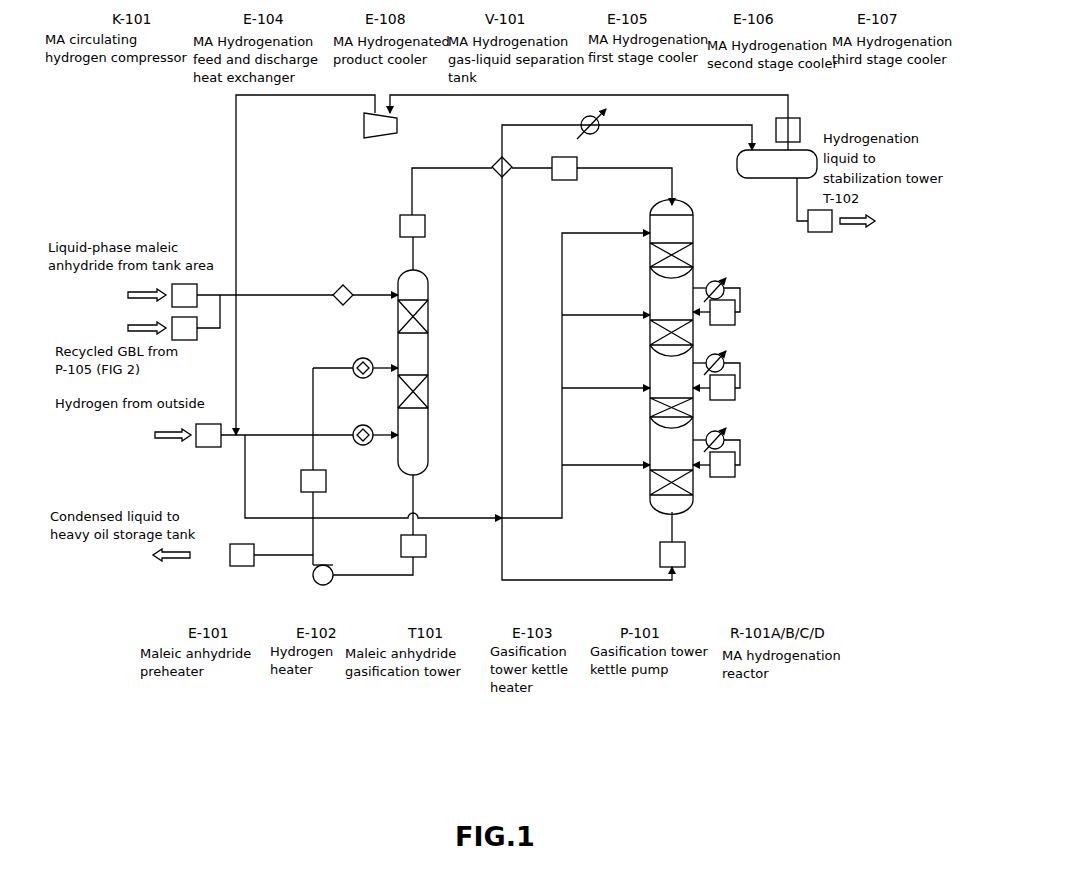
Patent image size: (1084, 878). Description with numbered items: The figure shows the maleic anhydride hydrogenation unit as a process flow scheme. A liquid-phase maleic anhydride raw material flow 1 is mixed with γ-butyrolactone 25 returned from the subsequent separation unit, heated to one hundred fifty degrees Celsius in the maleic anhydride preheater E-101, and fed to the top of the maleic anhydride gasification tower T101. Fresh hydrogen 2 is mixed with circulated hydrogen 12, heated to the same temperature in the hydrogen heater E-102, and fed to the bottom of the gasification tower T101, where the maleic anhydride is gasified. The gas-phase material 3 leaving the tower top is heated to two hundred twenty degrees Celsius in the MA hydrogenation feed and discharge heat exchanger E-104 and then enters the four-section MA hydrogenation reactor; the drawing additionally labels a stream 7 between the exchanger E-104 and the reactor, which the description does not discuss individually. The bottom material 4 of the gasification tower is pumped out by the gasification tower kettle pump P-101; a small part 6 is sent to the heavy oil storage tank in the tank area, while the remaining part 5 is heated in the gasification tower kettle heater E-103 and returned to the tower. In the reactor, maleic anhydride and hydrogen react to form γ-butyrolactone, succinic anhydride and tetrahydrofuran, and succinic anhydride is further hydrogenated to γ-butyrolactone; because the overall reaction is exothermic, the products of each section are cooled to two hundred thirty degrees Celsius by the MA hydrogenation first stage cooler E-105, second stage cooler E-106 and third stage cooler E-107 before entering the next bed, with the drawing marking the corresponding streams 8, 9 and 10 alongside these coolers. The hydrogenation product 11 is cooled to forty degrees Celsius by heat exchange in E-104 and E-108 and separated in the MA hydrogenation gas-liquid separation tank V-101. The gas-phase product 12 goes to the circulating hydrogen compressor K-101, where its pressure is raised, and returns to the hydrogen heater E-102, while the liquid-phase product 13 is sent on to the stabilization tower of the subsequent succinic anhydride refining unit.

The material flow 1 is at (184, 295).
The γ-butyrolactone 25 is at (184, 328).
The fresh hydrogen 2 is at (208, 435).
The gas-phase material 3 is at (412, 226).
The material at the bottom of the gasification tower 4 is at (413, 546).
The rest part 5 is at (313, 481).
The small part 6 is at (242, 555).
The reactor feed stream 7 is at (564, 168).
The first stage cooled recycle stream 8 is at (722, 312).
The second stage cooled recycle stream 9 is at (722, 387).
The third stage cooled recycle stream 10 is at (722, 464).
The hydrogenation product 11 is at (672, 554).
The hydrogenated gas-phase product 12 is at (788, 130).
The liquid-phase product 13 is at (820, 221).
The MA circulating hydrogen compressor K-101 is at (357, 125).
The MA hydrogenation feed and discharge heat exchanger E-104 is at (485, 176).
The heat exchanger E-108 is at (607, 135).
The MA hydrogenation gas-liquid separation tank V-101 is at (777, 178).
The MA hydrogenation first stage cooler E-105 is at (728, 282).
The MA hydrogenation second stage cooler E-106 is at (728, 355).
The MA hydrogenation third stage cooler E-107 is at (728, 432).
The maleic anhydride preheater E-101 is at (342, 306).
The hydrogen heater E-102 is at (363, 447).
The maleic anhydride gasification tower T101 is at (433, 372).
The gasification tower kettle heater E-103 is at (363, 380).
The gasification tower kettle pump P-101 is at (323, 588).